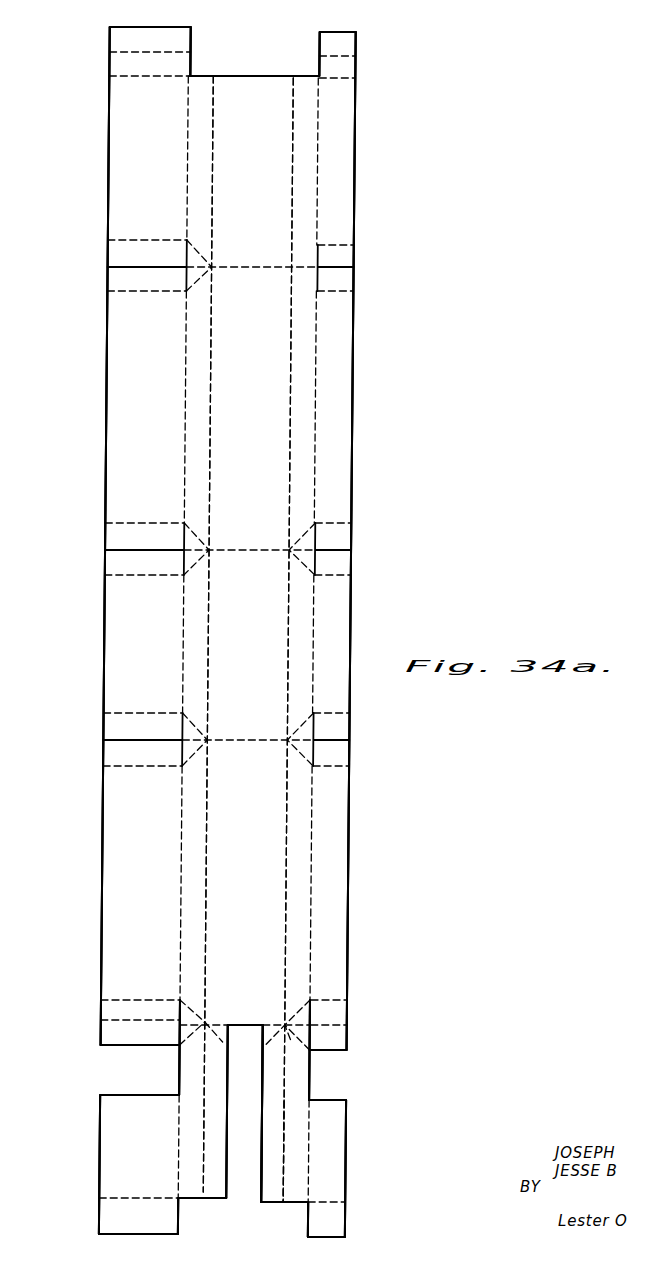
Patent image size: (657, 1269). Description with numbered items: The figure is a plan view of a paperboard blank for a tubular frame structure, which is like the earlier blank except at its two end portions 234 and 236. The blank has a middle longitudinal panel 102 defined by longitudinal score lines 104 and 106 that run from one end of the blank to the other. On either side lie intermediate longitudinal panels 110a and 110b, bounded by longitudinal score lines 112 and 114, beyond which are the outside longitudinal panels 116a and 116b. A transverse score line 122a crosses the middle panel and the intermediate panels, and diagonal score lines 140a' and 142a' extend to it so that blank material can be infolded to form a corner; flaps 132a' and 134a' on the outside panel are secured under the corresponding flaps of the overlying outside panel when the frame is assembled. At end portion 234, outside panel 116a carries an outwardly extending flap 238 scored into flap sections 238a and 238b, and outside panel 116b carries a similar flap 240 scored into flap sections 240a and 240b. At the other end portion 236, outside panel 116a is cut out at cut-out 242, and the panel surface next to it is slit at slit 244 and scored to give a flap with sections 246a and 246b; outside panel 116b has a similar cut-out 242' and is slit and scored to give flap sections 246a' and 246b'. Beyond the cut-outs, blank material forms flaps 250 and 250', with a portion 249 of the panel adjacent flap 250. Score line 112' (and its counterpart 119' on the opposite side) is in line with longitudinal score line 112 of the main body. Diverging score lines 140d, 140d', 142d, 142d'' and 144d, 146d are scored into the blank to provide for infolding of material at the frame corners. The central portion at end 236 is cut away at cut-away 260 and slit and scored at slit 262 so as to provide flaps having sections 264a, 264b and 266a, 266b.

The end portion 234 is at (381, 115).
The middle longitudinal panel 102 is at (262, 369).
The outwardly extending flap 238 is at (174, 27).
The outwardly extending flap 240 is at (330, 31).
The flap section 238a is at (122, 38).
The flap section 238b is at (123, 62).
The flap section 240a is at (343, 44).
The flap section 240b is at (345, 66).
The outside longitudinal panel 116a is at (128, 172).
The outside longitudinal panel 116b is at (345, 155).
The intermediate longitudinal panel 110a is at (203, 145).
The intermediate longitudinal panel 110b is at (305, 188).
The longitudinal score line 112 is at (121, 538).
The longitudinal score line 114 is at (317, 391).
The longitudinal score line 104 is at (211, 440).
The longitudinal score line 106 is at (292, 478).
The flap 132a' is at (147, 227).
The flap 134a' is at (146, 308).
The diagonal score line 140a' is at (232, 248).
The diagonal score line 142a' is at (232, 288).
The transverse score line 122a is at (268, 265).
The slit 262 is at (249, 1024).
The diverging score line 144d is at (300, 1012).
The flap section 246a is at (115, 979).
The flap section 246b is at (114, 1002).
The flap section 246a' is at (361, 980).
The flap section 246b' is at (364, 1008).
The slit 244 is at (178, 1003).
The diverging score line 140d is at (221, 986).
The diverging score line 140d' is at (230, 1009).
The cut-out 242 is at (114, 1043).
The diverging score line 142d'' is at (164, 1033).
The diverging score line 142d is at (176, 1047).
The cut-out 242' is at (360, 1030).
The diverging score line 146d is at (297, 1043).
The end portion 236 is at (371, 1094).
The cut-away 260 is at (262, 1096).
The flap section 266a is at (270, 1137).
The fold line 119' is at (362, 1151).
The flap section 266b is at (298, 1178).
The bottom left panel 249 is at (115, 1138).
The score line 112' is at (155, 1146).
The flap 250 is at (114, 1216).
The flap 250' is at (355, 1224).
The flap section 264a is at (219, 1190).
The flap section 264b is at (193, 1200).